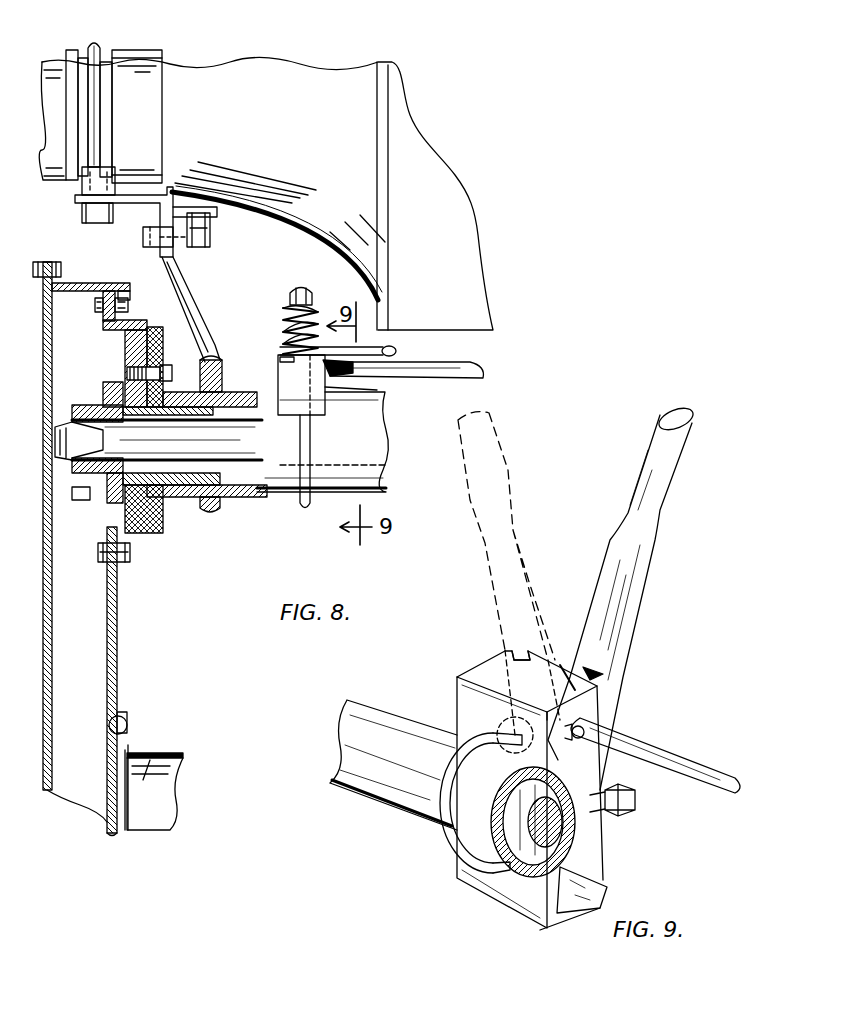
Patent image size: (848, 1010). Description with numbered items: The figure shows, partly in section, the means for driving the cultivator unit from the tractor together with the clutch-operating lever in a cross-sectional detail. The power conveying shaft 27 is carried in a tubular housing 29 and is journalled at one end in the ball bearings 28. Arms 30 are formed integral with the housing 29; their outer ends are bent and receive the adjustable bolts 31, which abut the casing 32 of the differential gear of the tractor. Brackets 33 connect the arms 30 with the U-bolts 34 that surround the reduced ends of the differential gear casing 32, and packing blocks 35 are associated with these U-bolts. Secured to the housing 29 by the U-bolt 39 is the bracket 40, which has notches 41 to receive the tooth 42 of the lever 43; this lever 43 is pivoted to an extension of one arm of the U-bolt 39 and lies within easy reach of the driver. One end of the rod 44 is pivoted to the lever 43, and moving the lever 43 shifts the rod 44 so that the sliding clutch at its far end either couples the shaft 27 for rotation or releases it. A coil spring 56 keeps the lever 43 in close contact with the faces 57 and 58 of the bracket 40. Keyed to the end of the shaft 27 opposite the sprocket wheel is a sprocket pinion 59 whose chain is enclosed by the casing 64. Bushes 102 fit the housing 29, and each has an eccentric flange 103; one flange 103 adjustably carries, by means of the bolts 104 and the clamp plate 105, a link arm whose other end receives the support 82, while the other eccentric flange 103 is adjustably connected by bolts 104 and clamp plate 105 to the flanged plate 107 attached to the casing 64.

In FIG. 8, the power conveying shaft 27 is at (238, 442).
In FIG. 9, the power conveying shaft 27 is at (503, 870).
In FIG. 8, the ball bearings 28 is at (105, 400).
In FIG. 8, the tubular housing 29 is at (357, 442).
In FIG. 9, the tubular housing 29 is at (393, 765).
In FIG. 8, the arms 30 is at (200, 293).
In FIG. 8, the adjustable bolts 31 is at (213, 193).
In FIG. 8, the casing of the differential gear 32 is at (266, 193).
In FIG. 8, the brackets 33 is at (165, 187).
In FIG. 8, the U-bolts 34 is at (100, 47).
In FIG. 8, the packing blocks 35 is at (100, 177).
In FIG. 8, the U-bolt 39 is at (305, 505).
In FIG. 9, the U-bolt 39 is at (460, 850).
In FIG. 8, the bracket 40 is at (293, 395).
In FIG. 9, the bracket 40 is at (463, 710).
In FIG. 8, the notches 41 is at (280, 357).
In FIG. 9, the notches 41 is at (527, 653).
In FIG. 8, the tooth 42 is at (350, 388).
In FIG. 9, the tooth 42 is at (603, 672).
In FIG. 8, the lever 43 is at (394, 350).
In FIG. 9, the lever 43 is at (637, 547).
In FIG. 8, the rod 44 is at (488, 374).
In FIG. 9, the rod 44 is at (687, 760).
In FIG. 8, the coil spring 56 is at (315, 313).
In FIG. 9, the coil spring 56 is at (636, 812).
In FIG. 9, the face of the bracket 57 is at (565, 667).
In FIG. 9, the face of the bracket 58 is at (593, 882).
In FIG. 8, the sprocket pinion 59 is at (78, 500).
In FIG. 8, the casing 64 is at (118, 660).
In FIG. 8, the support 82 is at (172, 752).
In FIG. 8, the bushes 102 is at (203, 513).
In FIG. 8, the eccentric flanges 103 is at (123, 347).
In FIG. 8, the bolts 104 is at (172, 369).
In FIG. 8, the clamp plate 105 is at (158, 530).
In FIG. 8, the flanged plate 107 is at (138, 328).